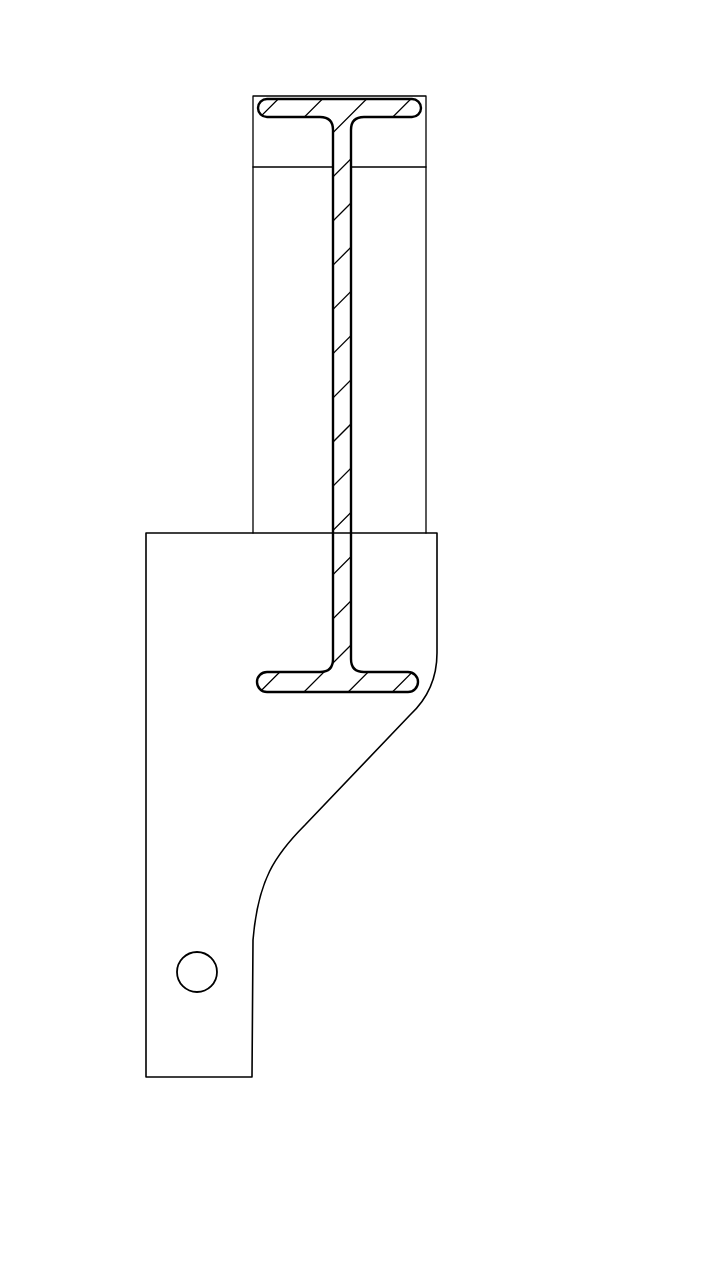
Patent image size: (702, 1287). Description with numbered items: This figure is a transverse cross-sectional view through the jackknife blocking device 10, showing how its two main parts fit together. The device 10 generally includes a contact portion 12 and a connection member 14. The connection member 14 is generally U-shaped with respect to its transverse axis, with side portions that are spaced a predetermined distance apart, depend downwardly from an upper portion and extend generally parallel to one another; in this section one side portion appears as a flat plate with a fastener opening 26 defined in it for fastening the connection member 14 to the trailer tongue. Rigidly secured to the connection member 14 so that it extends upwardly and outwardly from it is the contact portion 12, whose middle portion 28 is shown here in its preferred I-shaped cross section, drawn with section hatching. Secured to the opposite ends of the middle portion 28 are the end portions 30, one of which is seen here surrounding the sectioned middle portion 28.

The jackknife blocking device 10 is at (172, 73).
The contact portion 12 is at (488, 402).
The connection member 14 is at (252, 805).
The opening 26 is at (146, 938).
The middle portion 28 is at (351, 564).
The end portion 30 is at (374, 314).